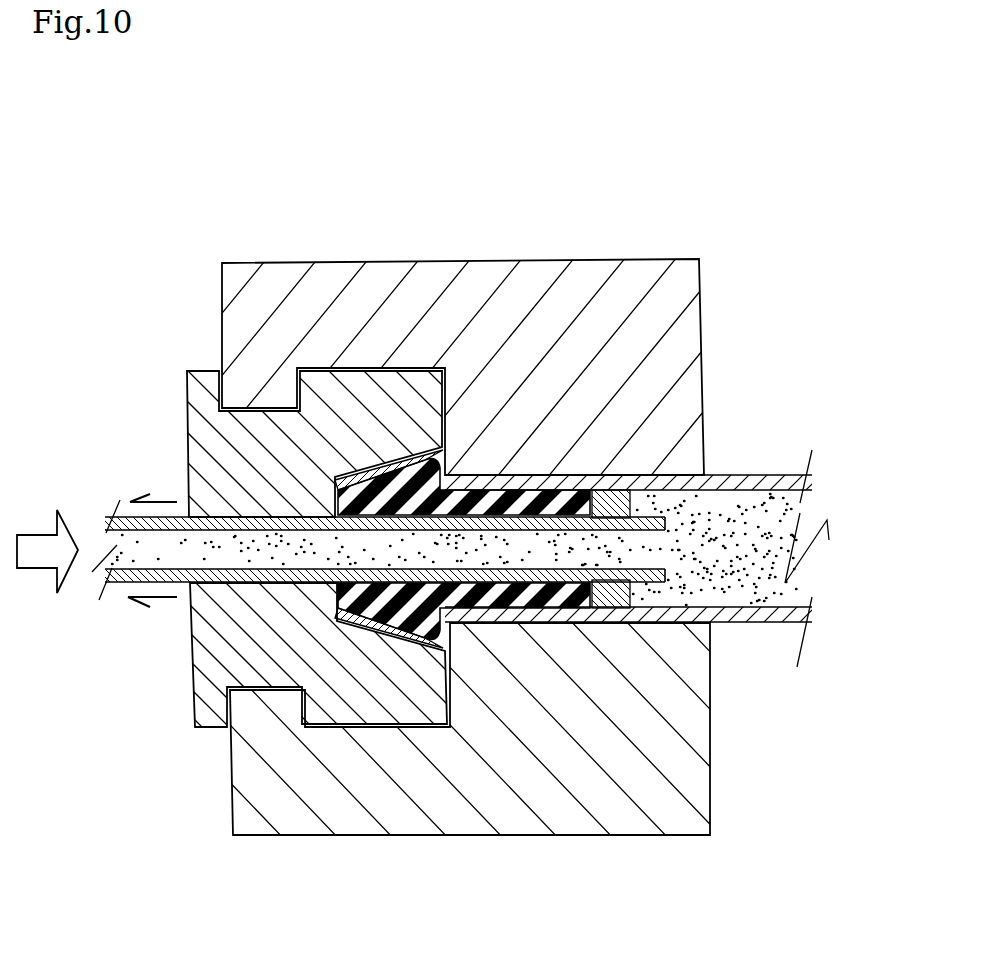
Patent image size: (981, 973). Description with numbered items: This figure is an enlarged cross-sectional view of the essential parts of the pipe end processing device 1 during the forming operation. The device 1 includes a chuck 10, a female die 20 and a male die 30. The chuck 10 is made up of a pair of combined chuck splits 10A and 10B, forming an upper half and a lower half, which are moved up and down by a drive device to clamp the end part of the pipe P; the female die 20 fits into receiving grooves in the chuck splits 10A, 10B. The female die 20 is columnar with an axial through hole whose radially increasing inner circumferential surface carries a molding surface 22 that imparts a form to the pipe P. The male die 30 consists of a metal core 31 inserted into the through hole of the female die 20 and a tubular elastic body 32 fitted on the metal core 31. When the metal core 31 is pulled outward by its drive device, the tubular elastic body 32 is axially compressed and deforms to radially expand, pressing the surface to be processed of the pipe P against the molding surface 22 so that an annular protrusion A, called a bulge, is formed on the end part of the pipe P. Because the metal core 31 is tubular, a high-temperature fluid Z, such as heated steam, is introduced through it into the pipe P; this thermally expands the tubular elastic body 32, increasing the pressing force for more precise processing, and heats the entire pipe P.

The pipe end processing device 1 is at (188, 323).
The chuck 10 is at (481, 552).
The chuck split 10A is at (558, 293).
The chuck split 10B is at (560, 768).
The female die 20 is at (169, 435).
The molding surface 22 is at (388, 473).
The male die 30 is at (590, 493).
The metal core 31 is at (208, 577).
The tubular elastic body 32 is at (425, 593).
The annular protrusion A is at (383, 630).
The pipe P is at (745, 478).
The high-temperature fluid Z is at (143, 548).